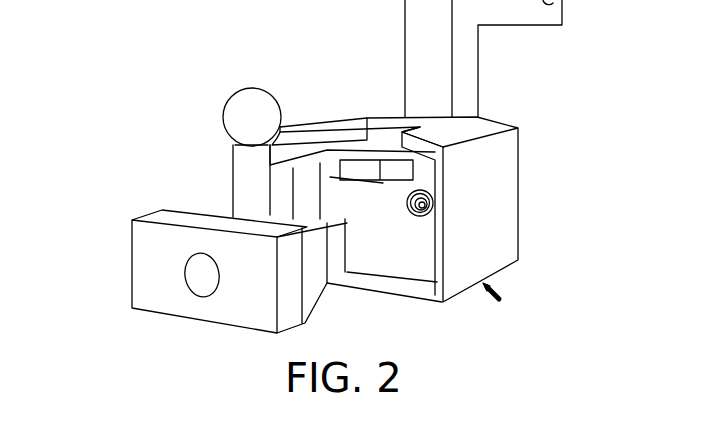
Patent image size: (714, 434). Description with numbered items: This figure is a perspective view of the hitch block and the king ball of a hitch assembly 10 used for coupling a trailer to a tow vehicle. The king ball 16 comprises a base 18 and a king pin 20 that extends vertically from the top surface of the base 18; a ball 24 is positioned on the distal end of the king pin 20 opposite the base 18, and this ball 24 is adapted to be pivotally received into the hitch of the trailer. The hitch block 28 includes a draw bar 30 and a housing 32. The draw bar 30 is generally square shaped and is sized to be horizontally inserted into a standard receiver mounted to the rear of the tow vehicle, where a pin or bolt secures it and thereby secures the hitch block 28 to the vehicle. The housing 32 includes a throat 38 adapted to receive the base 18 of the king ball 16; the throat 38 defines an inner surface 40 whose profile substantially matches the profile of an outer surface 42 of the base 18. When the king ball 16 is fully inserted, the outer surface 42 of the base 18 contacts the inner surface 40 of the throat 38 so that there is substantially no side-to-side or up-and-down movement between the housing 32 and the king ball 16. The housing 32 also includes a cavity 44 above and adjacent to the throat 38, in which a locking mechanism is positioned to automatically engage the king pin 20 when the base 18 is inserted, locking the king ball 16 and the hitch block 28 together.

The hitch assembly 10 is at (95, 300).
The king ball 16 is at (128, 263).
The base 18 is at (182, 303).
The king pin 20 is at (245, 180).
The ball 24 is at (235, 118).
The hitch block 28 is at (500, 300).
The draw bar 30 is at (502, 3).
The housing 32 is at (497, 235).
The throat 38 is at (357, 213).
The inner surface 40 is at (385, 182).
The outer surface 42 is at (313, 293).
The cavity 44 is at (378, 150).